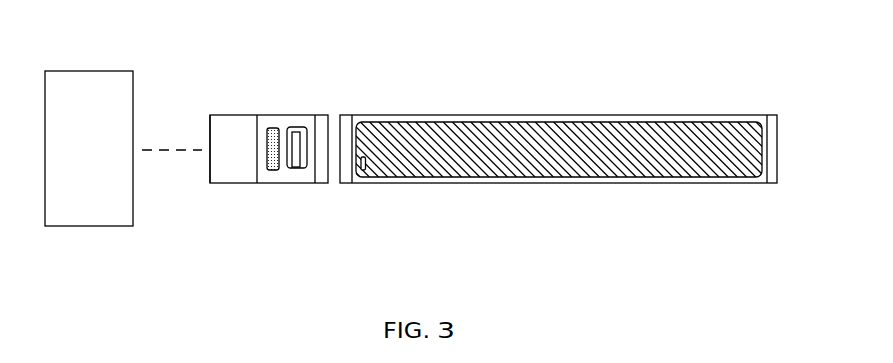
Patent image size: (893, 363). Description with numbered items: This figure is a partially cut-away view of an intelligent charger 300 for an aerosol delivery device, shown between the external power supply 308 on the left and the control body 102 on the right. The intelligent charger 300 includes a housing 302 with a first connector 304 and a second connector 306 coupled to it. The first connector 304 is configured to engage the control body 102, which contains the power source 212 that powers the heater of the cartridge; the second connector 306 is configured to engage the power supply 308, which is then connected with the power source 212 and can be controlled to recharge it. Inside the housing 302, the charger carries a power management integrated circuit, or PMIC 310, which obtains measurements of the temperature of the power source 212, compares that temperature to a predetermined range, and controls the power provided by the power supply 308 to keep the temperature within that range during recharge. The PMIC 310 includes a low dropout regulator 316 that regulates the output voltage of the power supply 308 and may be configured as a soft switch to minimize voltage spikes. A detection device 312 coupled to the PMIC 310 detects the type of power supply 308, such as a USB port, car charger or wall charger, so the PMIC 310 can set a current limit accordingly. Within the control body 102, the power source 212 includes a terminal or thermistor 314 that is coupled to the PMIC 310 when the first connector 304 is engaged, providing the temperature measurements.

The intelligent charger 300 is at (223, 40).
The power supply 308 is at (88, 71).
The second connector 306 is at (210, 126).
The housing 302 is at (293, 184).
The first connector 304 is at (318, 114).
The power management integrated circuit (PMIC) 310 is at (292, 132).
The low dropout regulator 316 is at (298, 130).
The detection device 312 is at (272, 172).
The control body 102 is at (562, 114).
The power source 212 is at (530, 177).
The terminal or thermistor 314 is at (363, 170).